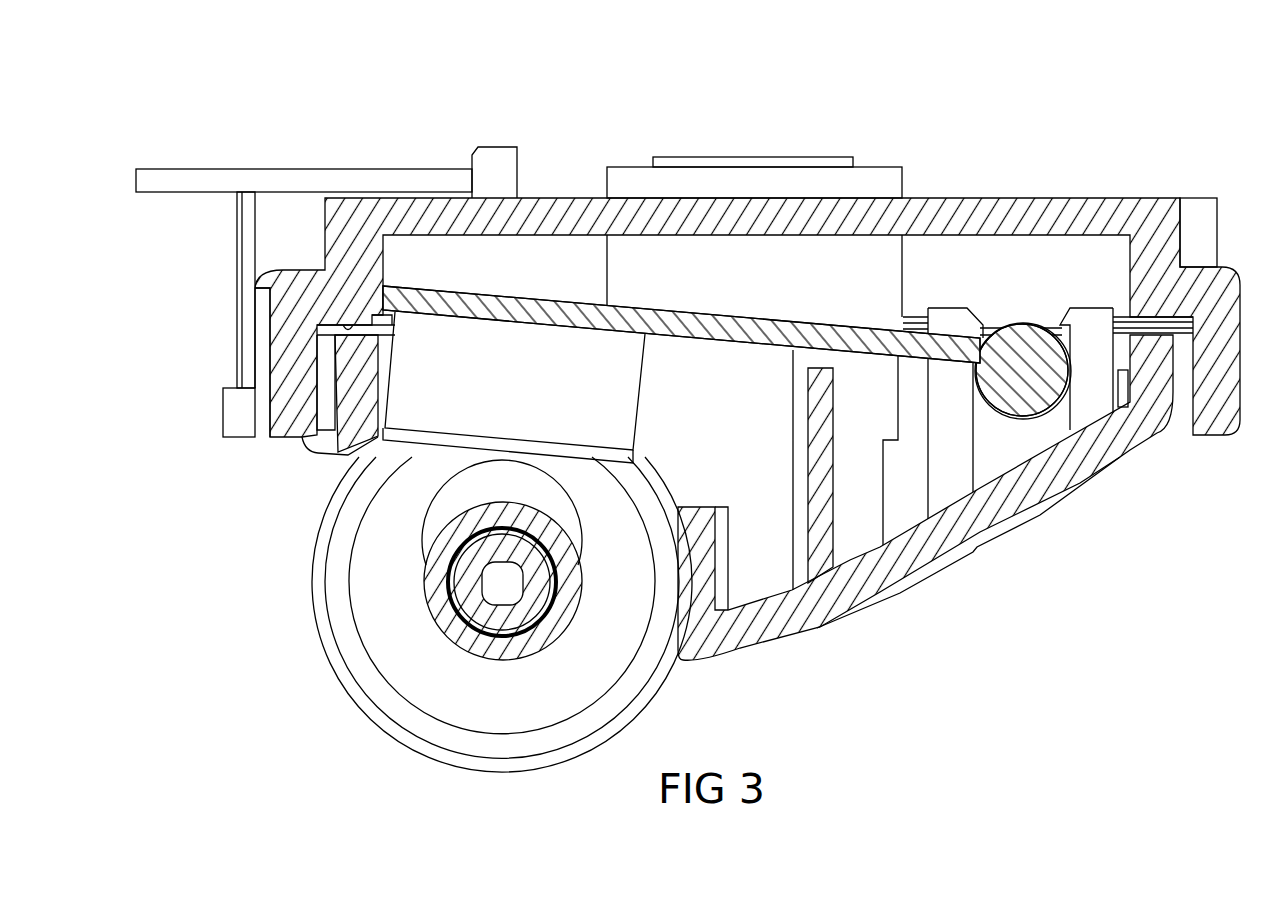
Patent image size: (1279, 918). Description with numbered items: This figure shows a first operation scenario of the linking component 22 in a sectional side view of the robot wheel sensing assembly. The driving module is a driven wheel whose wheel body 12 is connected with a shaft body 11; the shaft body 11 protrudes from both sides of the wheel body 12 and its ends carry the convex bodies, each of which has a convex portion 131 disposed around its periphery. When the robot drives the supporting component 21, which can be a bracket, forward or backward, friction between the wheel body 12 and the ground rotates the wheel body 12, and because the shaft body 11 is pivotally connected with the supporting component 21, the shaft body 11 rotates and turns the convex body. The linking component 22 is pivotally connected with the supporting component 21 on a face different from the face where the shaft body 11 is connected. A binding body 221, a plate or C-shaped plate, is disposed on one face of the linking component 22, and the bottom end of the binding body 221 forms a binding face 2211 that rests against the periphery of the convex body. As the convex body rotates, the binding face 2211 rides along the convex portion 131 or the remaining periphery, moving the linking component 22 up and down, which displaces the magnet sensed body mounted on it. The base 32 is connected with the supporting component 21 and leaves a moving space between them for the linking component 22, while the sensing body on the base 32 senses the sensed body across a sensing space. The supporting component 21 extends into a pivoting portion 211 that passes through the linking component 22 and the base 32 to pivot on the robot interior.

The shaft body 11 is at (458, 620).
The wheel body 12 is at (593, 653).
The convex portion 131 is at (462, 500).
The supporting component 21 is at (1023, 523).
The linking component 22 is at (833, 337).
The base 32 is at (1110, 198).
The pivoting portion 211 is at (750, 268).
The binding body 221 is at (423, 383).
The binding face 2211 is at (333, 452).